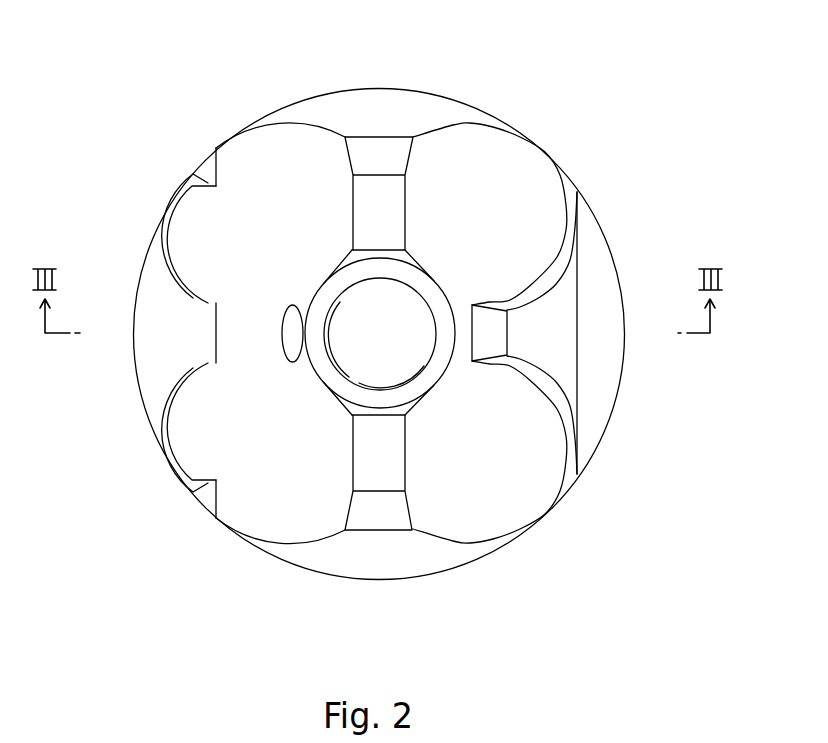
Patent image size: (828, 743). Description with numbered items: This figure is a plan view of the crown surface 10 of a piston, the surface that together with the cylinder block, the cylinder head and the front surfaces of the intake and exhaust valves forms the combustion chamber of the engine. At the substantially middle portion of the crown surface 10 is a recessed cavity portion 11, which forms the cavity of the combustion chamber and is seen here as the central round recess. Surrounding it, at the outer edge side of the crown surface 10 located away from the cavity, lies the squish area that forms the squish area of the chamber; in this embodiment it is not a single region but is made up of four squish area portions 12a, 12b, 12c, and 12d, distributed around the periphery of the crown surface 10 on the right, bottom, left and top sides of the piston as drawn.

The crown surface 10 is at (530, 170).
The recessed cavity portion 11 is at (398, 358).
The squish area portion 12a is at (610, 355).
The squish area portion 12b is at (378, 557).
The squish area portion 12c is at (153, 357).
The squish area portion 12d is at (378, 108).